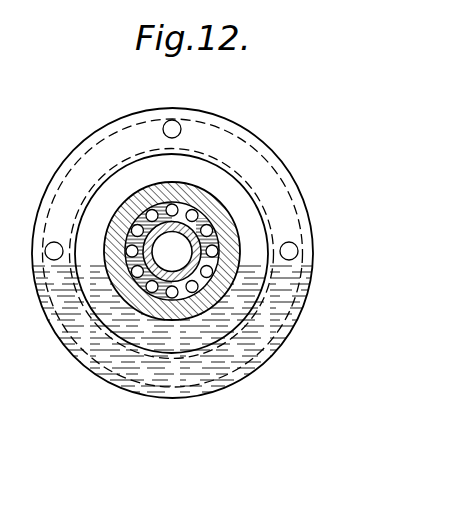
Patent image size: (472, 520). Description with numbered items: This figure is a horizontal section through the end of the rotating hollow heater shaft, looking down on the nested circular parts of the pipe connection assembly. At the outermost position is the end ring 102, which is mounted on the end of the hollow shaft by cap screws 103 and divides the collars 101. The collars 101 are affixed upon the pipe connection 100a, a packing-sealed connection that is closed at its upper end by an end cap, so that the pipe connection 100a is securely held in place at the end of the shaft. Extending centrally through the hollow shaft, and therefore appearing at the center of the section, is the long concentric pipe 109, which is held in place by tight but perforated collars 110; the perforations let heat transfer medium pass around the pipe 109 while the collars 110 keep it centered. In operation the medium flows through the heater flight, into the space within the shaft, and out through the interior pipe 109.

The perforated collar 110 is at (212, 230).
The cap screw 103 is at (291, 249).
The concentric pipe 109 is at (197, 262).
The pipe connection 100a is at (222, 300).
The end ring 102 is at (270, 344).
The collar 101 is at (215, 332).